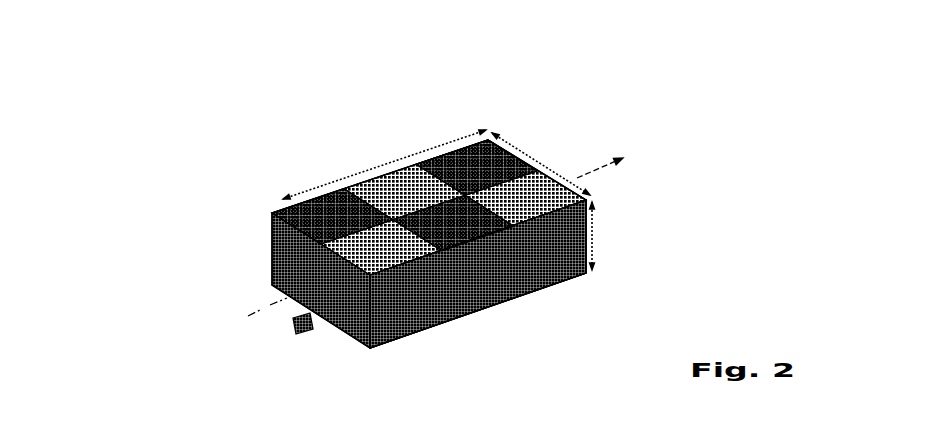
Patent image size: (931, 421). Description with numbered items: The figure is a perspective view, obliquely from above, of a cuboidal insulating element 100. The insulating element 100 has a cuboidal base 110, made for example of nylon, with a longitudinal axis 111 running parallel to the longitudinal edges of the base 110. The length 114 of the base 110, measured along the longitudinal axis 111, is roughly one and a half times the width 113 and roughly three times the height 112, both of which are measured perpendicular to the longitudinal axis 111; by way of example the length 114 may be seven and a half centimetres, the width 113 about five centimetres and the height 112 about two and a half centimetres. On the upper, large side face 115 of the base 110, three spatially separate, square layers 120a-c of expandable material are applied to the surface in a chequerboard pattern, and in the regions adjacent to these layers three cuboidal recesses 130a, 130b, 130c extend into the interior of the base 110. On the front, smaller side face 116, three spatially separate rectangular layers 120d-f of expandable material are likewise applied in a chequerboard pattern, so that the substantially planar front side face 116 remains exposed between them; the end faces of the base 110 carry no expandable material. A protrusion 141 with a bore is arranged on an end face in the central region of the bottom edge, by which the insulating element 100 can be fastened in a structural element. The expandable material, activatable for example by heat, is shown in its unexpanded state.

The insulating element 100 is at (202, 197).
The base 110 is at (290, 268).
The longitudinal axis 111 is at (592, 168).
The height 112 is at (598, 243).
The width 113 is at (497, 134).
The length 114 is at (308, 190).
The upper large side face 115 is at (530, 190).
The front smaller side face 116 is at (564, 270).
The quadratic layers of expandable material 120a-c is at (450, 153).
The rectangular layers of expandable material 120d-f is at (540, 242).
The cuboidal recess 130a is at (340, 215).
The cuboidal recess 130b is at (500, 187).
The cuboidal recess 130c is at (423, 227).
The protrusion 141 is at (292, 323).